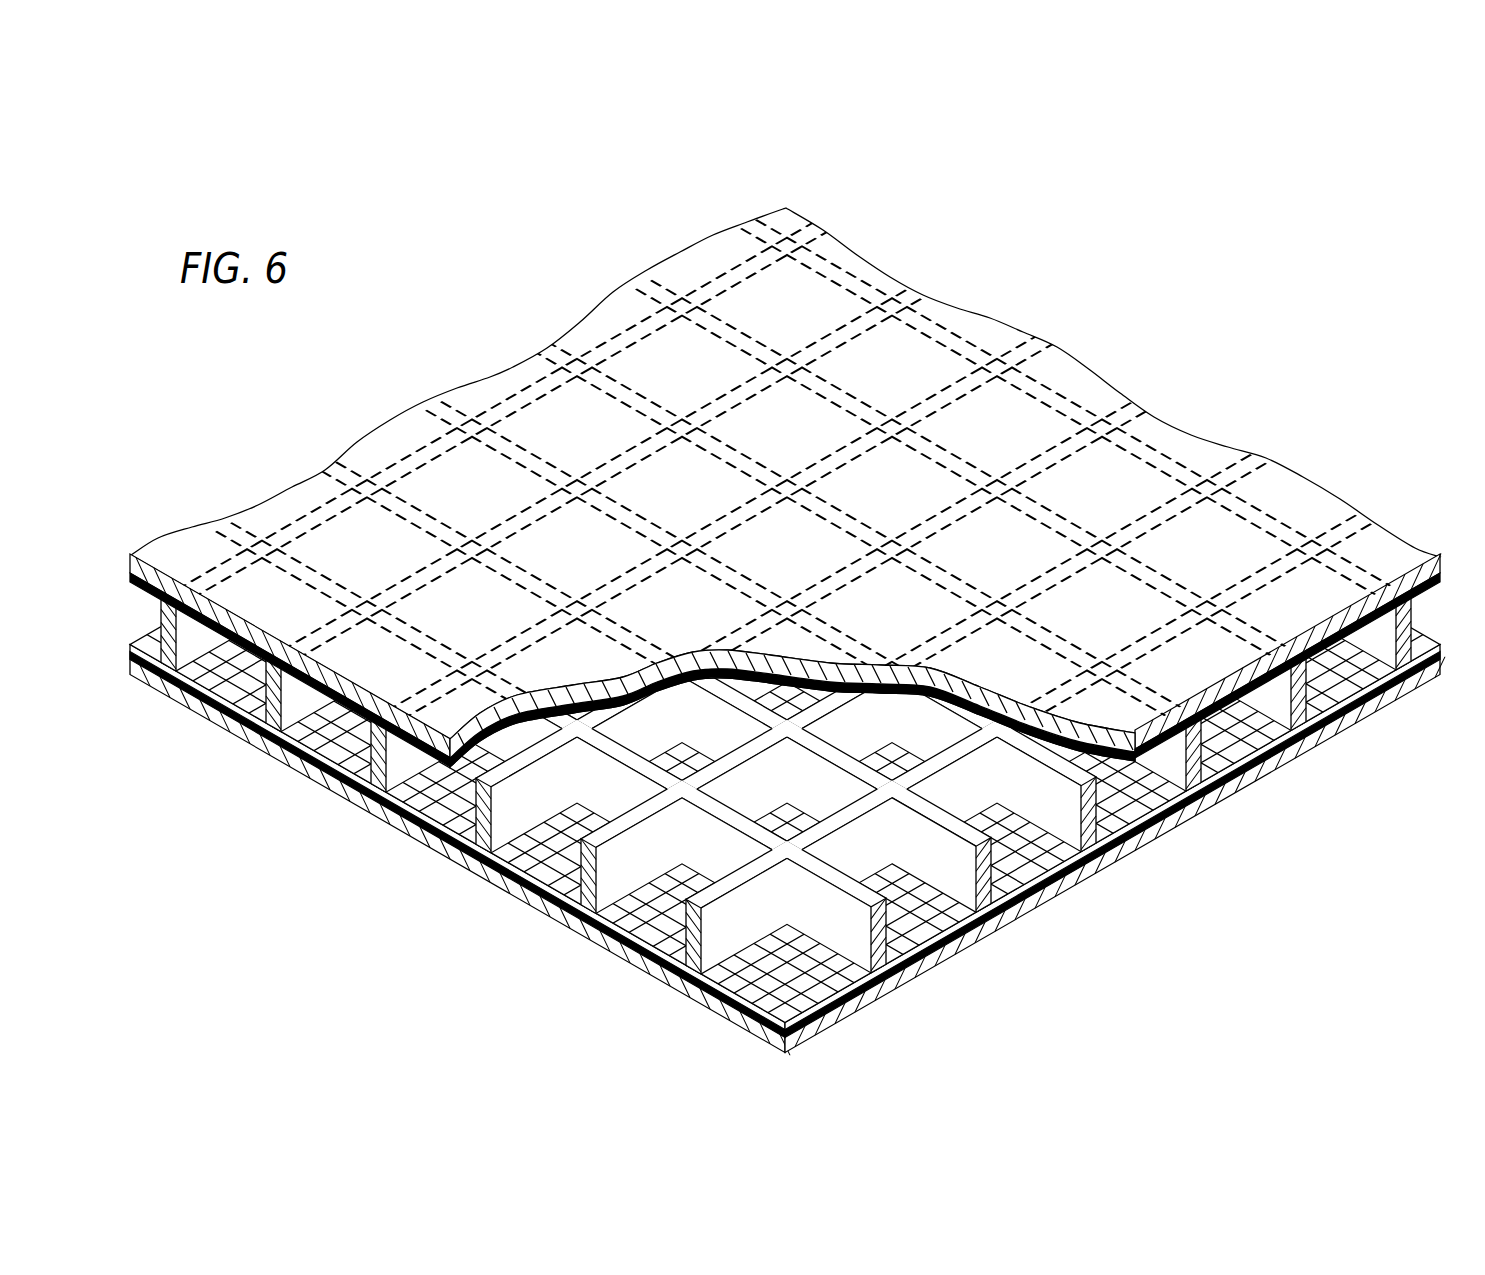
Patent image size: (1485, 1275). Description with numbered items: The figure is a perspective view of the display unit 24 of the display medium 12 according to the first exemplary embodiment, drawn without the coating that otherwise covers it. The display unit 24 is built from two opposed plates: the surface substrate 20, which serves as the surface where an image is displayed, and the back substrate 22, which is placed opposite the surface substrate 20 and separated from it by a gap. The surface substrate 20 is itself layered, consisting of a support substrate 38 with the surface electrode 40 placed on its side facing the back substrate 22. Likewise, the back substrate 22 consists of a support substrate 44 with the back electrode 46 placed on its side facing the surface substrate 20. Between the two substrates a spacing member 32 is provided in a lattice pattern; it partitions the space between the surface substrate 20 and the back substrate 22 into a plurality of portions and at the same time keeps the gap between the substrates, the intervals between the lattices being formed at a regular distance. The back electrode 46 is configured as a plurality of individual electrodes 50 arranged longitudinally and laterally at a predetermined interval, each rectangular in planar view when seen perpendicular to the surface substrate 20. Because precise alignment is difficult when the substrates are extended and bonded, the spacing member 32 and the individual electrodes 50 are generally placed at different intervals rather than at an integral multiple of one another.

The display medium 12 is at (807, 616).
The surface substrate 20 is at (785, 697).
The back substrate 22 is at (787, 661).
The display unit 24 is at (1088, 340).
The spacing member 32 is at (503, 832).
The support substrate 38 is at (1345, 636).
The surface electrode 40 is at (1265, 694).
The support substrate 44 is at (969, 950).
The back electrode 46 is at (989, 932).
The individual electrodes 50 is at (655, 912).